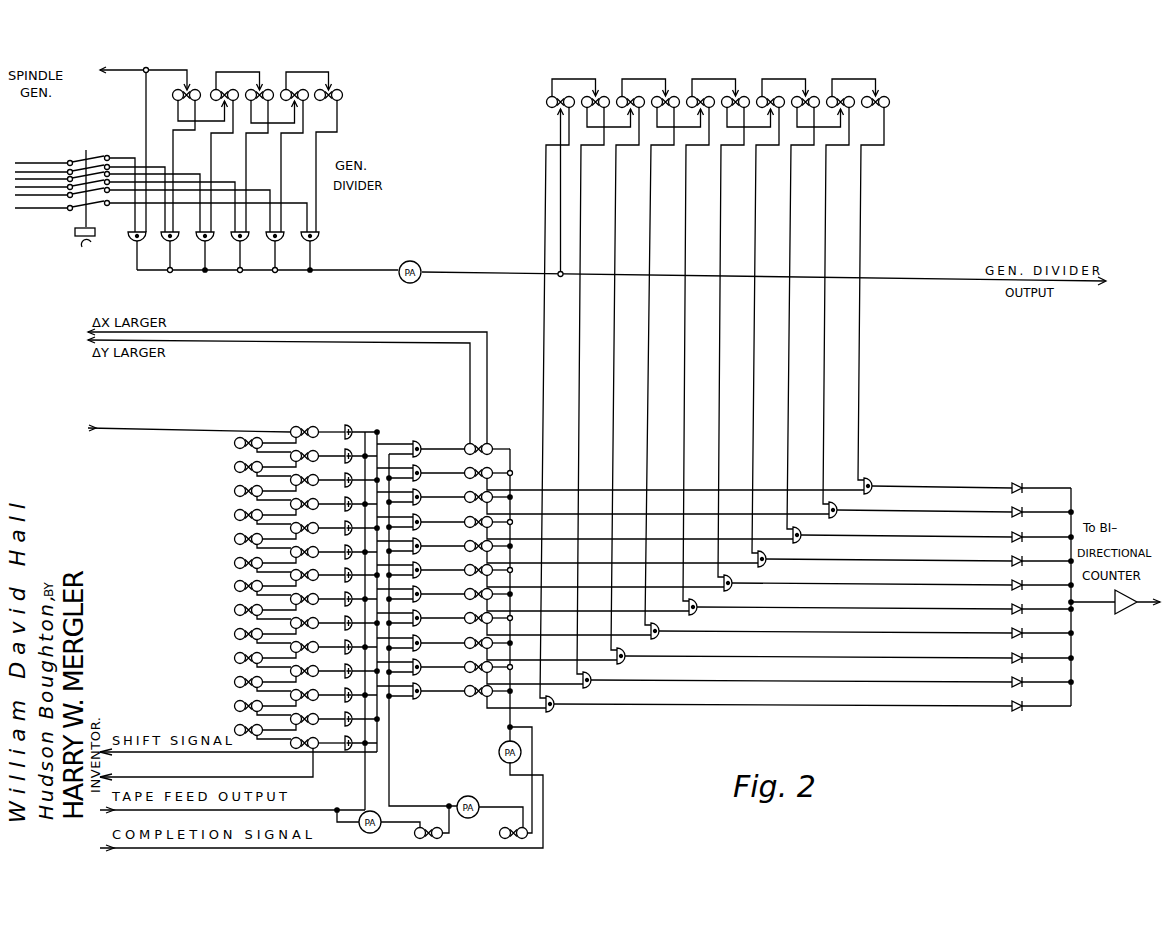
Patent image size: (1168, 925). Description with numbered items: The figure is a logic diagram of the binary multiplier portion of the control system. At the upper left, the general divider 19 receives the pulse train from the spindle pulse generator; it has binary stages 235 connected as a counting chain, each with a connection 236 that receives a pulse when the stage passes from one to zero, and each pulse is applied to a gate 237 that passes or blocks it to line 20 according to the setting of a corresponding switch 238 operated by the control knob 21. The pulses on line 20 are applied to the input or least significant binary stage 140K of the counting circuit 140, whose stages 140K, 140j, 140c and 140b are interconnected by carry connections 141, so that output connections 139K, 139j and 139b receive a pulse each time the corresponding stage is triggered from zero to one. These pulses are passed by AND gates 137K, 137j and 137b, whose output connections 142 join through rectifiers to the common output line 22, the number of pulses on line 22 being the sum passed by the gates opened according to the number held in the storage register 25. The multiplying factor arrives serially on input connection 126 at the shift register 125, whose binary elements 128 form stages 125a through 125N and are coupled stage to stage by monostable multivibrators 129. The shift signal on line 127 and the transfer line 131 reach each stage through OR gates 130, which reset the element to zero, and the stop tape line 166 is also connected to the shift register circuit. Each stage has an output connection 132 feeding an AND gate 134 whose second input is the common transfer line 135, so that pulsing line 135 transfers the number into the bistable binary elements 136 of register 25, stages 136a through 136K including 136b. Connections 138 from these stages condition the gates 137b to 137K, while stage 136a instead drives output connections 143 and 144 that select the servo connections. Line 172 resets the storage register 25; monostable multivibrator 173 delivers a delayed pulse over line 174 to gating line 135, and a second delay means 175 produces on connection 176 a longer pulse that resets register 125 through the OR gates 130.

The general divider 19 is at (238, 165).
The binary stages 235 is at (340, 93).
The connection 236 is at (211, 164).
The switch 238 is at (92, 156).
The control knob 21 is at (75, 234).
The gate 237 is at (272, 242).
The line 20 is at (484, 274).
The carry connection 141 is at (553, 79).
The counting circuit 140 is at (548, 130).
The binary stage 140K is at (550, 103).
The binary stage 140j is at (606, 95).
The binary stage 140c is at (880, 91).
The binary stage 140b is at (890, 102).
The output connection 139K is at (545, 376).
The output connection 139j is at (581, 366).
The output connection 139b is at (861, 457).
The AND gate 137K is at (549, 712).
The AND gate 137j is at (592, 682).
The AND gate 137b is at (874, 491).
The output connection 142 is at (988, 486).
The output line 22 is at (1100, 604).
The output connection 144 is at (352, 333).
The output connection 143 is at (345, 345).
The input connection 126 is at (165, 429).
The monostable multivibrator 129 is at (237, 449).
The binary elements 128 is at (298, 510).
The register stage 125a is at (336, 424).
The shift register 125 is at (214, 562).
The register stage 125N is at (312, 766).
The OR gate 130 is at (360, 427).
The transfer line 131 is at (362, 800).
The shift signal line 127 is at (156, 754).
The common transfer line 135 is at (390, 753).
The stop tape line 166 is at (234, 776).
The output connection 132 is at (394, 441).
The AND gate 134 is at (422, 440).
The register stage 136a is at (466, 468).
The register stage 136b is at (466, 493).
The bistable binary elements 136 is at (466, 570).
The register stage 136K is at (468, 690).
The storage register 25 is at (462, 544).
The connection 138 is at (591, 488).
The line 172 is at (368, 834).
The output connection 176 is at (446, 805).
The line 174 is at (501, 806).
The second delay means 175 is at (444, 834).
The monostable multivibrator 173 is at (533, 825).